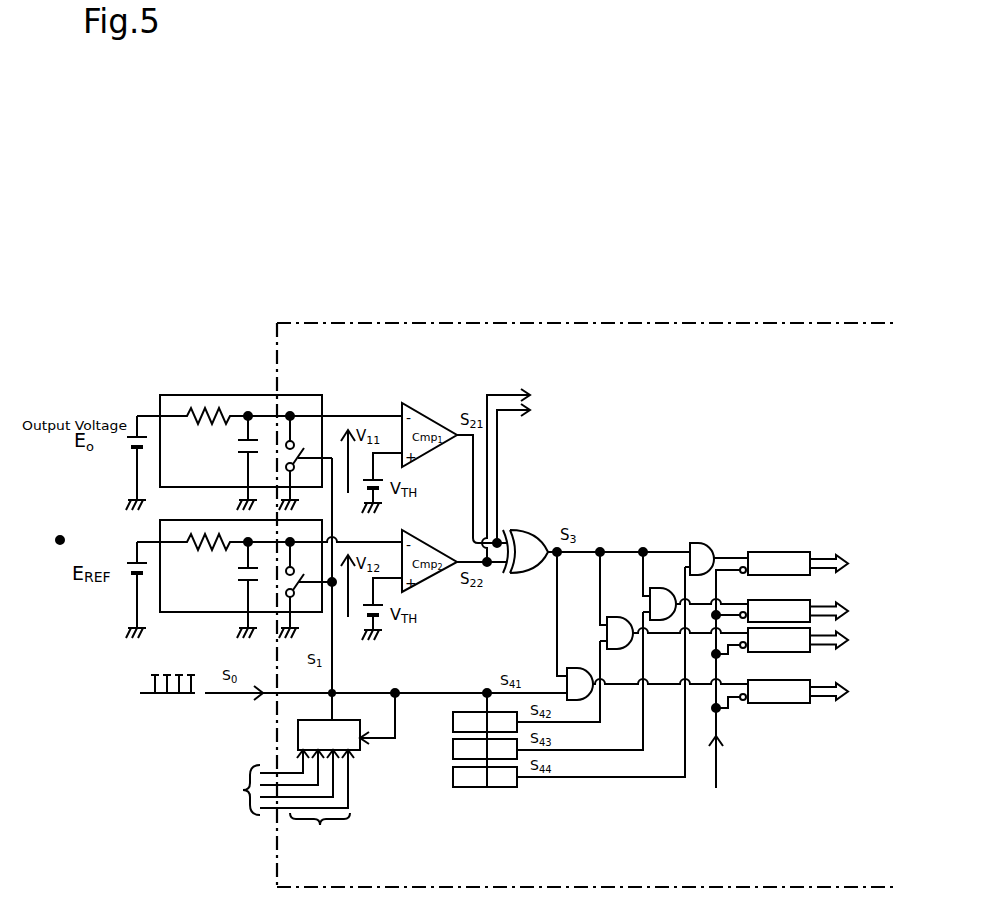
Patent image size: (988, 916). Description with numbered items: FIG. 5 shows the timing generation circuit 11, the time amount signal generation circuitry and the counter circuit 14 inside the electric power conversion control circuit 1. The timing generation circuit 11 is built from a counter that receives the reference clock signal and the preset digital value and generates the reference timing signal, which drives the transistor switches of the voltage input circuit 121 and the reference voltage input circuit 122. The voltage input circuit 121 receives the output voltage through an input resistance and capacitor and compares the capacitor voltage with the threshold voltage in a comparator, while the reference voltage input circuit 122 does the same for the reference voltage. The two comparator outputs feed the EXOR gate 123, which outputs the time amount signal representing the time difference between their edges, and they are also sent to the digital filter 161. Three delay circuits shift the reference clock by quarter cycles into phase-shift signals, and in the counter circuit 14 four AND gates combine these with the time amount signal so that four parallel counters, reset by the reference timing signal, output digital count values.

The electric power conversion control circuit 1 is at (585, 588).
The timing generation circuit 11 is at (312, 720).
The voltage input circuit 121 is at (281, 443).
The reference voltage input circuit 122 is at (281, 570).
The EXOR gate 123 is at (525, 538).
The counter circuit 14 is at (663, 690).
The digital filter 161 is at (628, 475).